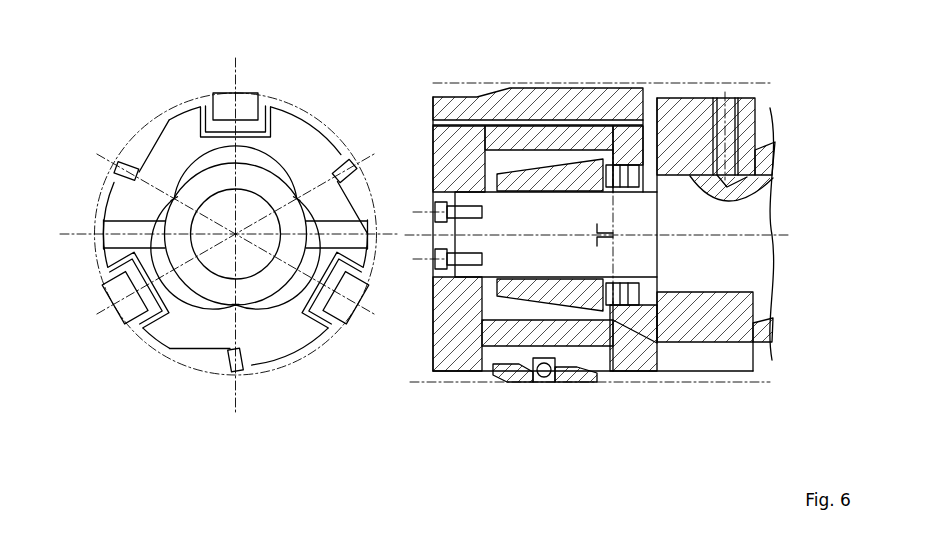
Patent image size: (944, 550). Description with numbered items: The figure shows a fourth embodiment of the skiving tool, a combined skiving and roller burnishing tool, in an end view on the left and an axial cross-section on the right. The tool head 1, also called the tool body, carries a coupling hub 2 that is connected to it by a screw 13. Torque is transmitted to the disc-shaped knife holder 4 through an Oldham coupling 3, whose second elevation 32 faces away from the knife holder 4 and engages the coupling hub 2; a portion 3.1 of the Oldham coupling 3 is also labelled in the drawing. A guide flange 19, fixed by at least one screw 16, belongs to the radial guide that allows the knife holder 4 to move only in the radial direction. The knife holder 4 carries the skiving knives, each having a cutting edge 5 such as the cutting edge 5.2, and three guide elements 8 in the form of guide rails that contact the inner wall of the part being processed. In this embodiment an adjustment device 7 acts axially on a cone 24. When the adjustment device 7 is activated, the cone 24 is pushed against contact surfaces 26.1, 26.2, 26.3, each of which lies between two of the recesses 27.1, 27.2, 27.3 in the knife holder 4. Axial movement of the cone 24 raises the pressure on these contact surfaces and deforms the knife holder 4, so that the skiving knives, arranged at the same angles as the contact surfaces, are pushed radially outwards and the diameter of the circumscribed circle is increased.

The tool head 1 is at (752, 268).
The coupling hub 2 is at (733, 332).
The Oldham coupling 3 is at (633, 320).
The shoulder of holder body 3.1 is at (600, 228).
The knife holder 4 is at (310, 332).
The cutting edge 5 is at (515, 384).
The cutting edge 5.2 is at (545, 384).
The adjustment device 7 is at (620, 165).
The guide elements 8 is at (130, 307).
The screw 13 is at (724, 108).
The screw 16 is at (435, 206).
The guide flange 19 is at (448, 355).
The cone 24 is at (180, 258).
The contact surface 26.1 is at (240, 312).
The contact surface 26.2 is at (178, 201).
The contact surface 26.3 is at (288, 199).
The recess 27.1 is at (262, 162).
The recess 27.2 is at (193, 300).
The recess 27.3 is at (198, 162).
The second elevation 32 is at (643, 320).